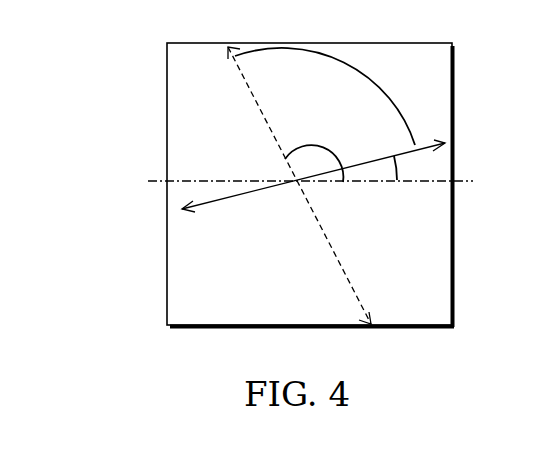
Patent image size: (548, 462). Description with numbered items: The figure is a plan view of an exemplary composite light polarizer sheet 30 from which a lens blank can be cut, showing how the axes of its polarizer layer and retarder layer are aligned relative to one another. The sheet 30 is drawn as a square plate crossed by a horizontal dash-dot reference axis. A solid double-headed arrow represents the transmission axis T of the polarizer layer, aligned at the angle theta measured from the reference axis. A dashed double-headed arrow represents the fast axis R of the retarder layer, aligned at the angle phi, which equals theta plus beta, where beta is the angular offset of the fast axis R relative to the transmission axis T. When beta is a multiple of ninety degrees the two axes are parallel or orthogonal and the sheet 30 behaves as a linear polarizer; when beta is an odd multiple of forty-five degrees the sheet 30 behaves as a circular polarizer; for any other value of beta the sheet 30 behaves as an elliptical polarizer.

The sheet 30 is at (154, 92).
The transmission axis T is at (219, 198).
The fast axis R is at (352, 292).